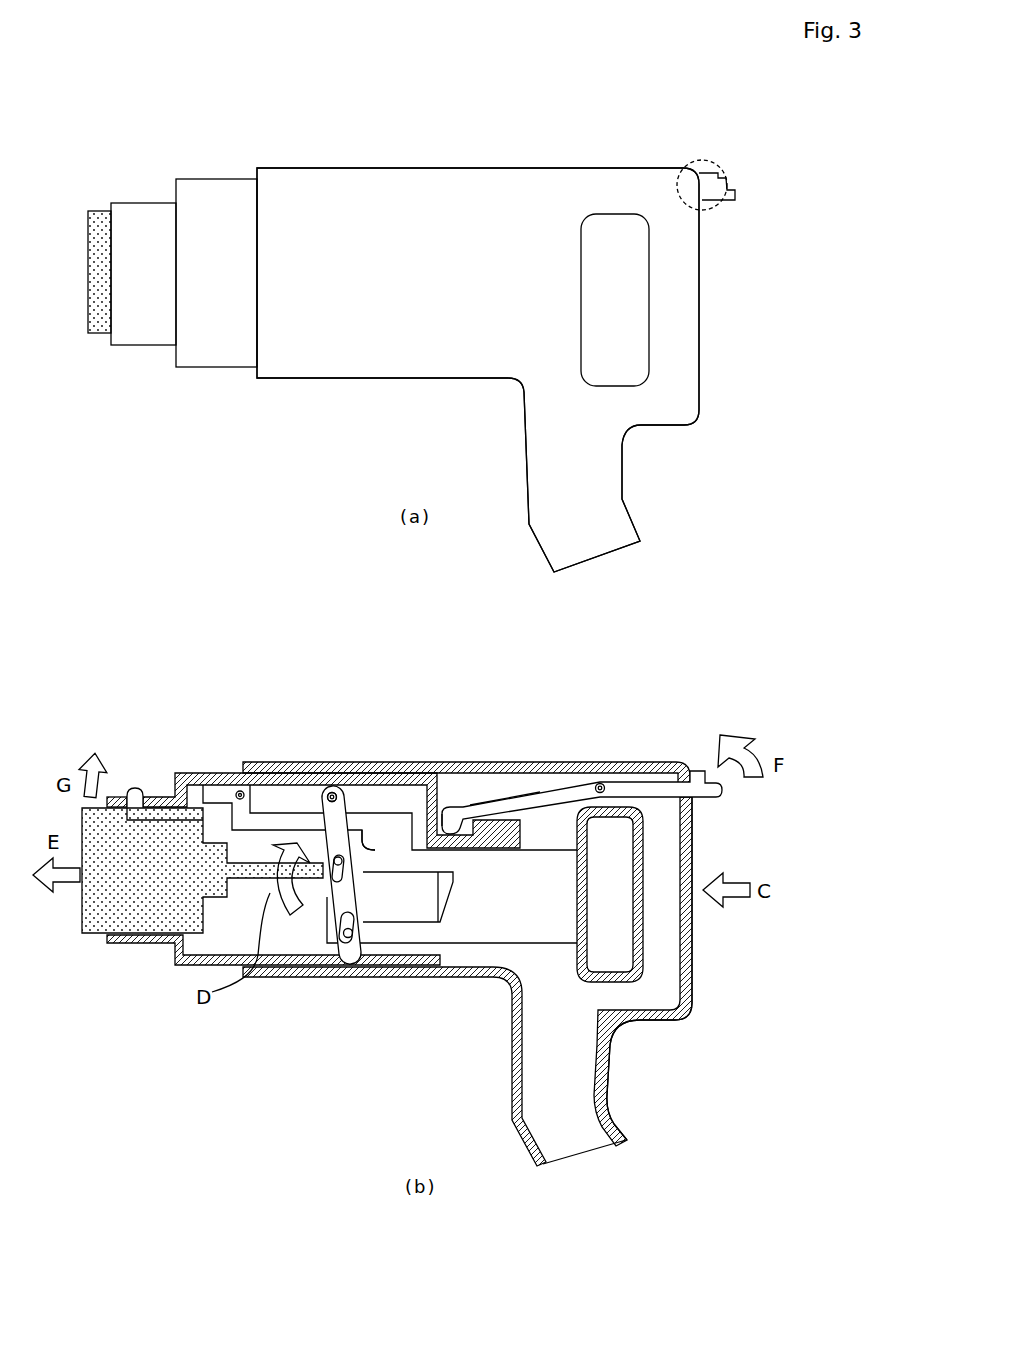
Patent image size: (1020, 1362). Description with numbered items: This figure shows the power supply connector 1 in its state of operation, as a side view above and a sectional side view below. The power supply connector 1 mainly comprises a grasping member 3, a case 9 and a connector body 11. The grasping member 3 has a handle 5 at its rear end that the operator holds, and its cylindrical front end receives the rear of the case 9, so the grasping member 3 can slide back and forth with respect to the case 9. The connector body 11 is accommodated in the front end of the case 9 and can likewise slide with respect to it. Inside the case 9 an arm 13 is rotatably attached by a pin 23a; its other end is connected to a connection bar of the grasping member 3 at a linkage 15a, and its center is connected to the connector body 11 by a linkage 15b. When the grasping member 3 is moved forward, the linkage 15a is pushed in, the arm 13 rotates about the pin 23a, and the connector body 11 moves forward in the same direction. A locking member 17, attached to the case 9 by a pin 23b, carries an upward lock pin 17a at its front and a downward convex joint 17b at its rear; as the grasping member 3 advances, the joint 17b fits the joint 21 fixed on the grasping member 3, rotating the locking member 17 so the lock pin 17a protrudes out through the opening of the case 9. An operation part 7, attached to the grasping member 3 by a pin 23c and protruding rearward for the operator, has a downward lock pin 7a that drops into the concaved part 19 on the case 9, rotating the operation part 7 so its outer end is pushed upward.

The power supply connector 1 is at (350, 152).
The grasping member 3 is at (343, 381).
The handle 5 is at (652, 282).
The operation part 7 is at (730, 170).
The lock pin 7a is at (487, 805).
The case 9 is at (145, 208).
The connector body 11 is at (90, 335).
The arm 13 is at (333, 897).
The linkage 15a is at (348, 935).
The linkage 15b is at (343, 866).
The locking member 17 is at (203, 793).
The lock pin 17a is at (137, 800).
The joint 17b is at (372, 843).
The concaved part 19 is at (460, 805).
The joint 21 is at (347, 785).
The pin 23a is at (333, 792).
The pin 23b is at (240, 794).
The pin 23c is at (600, 784).